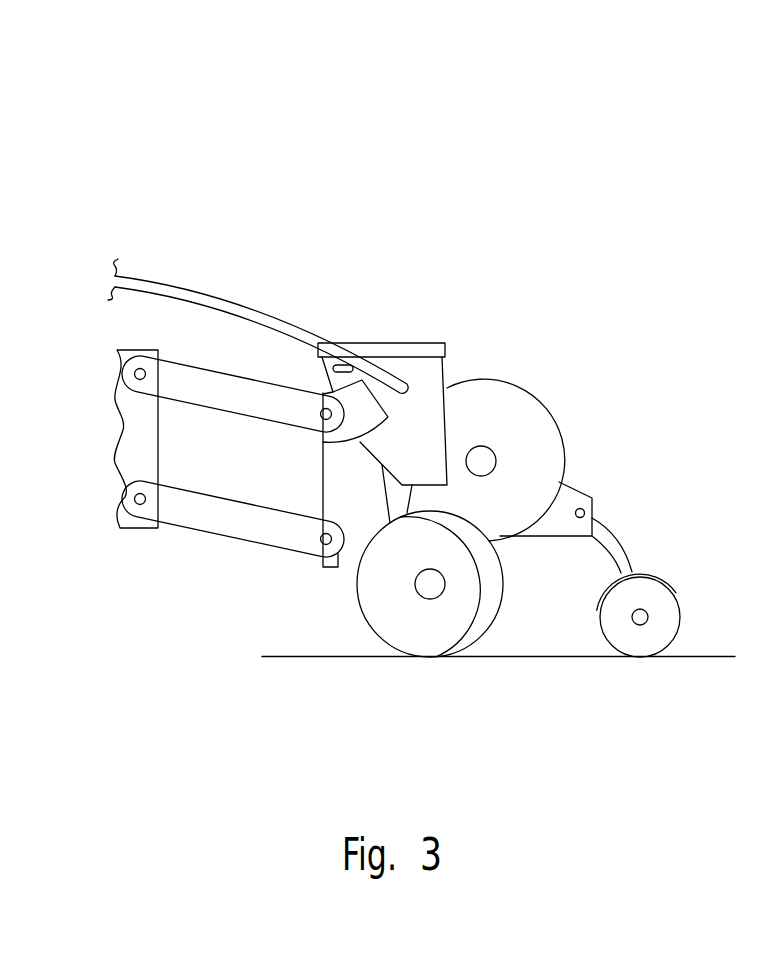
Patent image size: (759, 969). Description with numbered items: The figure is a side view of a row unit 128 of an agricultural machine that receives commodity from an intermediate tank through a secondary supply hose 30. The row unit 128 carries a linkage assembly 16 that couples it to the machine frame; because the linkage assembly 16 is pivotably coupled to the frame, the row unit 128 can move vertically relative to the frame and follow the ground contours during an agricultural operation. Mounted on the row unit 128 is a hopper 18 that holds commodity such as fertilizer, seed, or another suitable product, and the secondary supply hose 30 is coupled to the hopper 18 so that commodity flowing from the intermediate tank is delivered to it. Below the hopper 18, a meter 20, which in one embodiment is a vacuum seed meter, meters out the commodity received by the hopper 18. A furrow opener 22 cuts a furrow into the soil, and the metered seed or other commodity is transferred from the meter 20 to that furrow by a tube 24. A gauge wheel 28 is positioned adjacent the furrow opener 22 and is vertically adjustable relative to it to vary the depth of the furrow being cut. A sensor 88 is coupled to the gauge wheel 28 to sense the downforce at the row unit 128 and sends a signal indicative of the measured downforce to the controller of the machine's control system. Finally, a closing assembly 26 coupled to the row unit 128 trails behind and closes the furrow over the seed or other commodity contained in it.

The row unit 128 is at (522, 138).
The secondary supply hose 30 is at (182, 288).
The linkage assembly 16 is at (196, 548).
The tube 24 is at (333, 487).
The hopper 18 is at (429, 463).
The meter 20 is at (503, 433).
The furrow opener 22 is at (336, 645).
The gauge wheel 28 is at (458, 617).
The sensor 88 is at (432, 583).
The closing assembly 26 is at (647, 580).